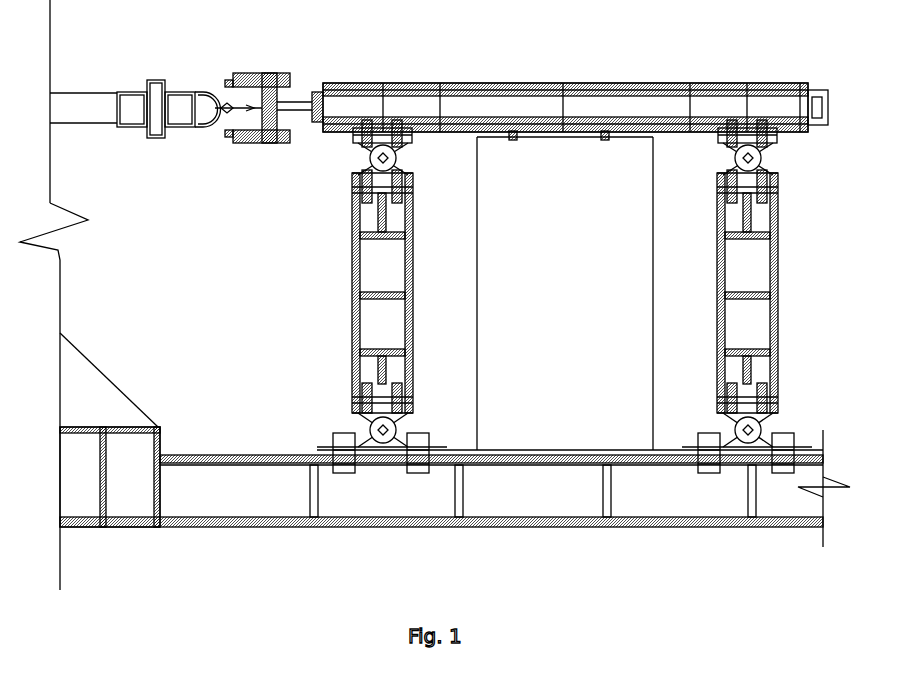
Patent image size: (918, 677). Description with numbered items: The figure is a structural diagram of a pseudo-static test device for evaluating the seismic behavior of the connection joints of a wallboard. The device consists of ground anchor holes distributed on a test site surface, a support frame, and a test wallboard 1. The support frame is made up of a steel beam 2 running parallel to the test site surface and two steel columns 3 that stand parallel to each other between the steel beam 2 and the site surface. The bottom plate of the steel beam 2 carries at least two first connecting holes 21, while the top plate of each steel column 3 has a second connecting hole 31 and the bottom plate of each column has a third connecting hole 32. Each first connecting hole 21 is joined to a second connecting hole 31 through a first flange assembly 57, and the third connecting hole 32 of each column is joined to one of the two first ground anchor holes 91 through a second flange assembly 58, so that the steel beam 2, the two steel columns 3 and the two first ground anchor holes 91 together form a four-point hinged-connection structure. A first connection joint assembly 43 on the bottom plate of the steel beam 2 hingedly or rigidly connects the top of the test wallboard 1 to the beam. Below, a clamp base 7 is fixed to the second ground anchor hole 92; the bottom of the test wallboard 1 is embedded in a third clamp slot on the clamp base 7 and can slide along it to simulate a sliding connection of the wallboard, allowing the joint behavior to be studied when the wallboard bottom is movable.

The test wallboard 1 is at (505, 272).
The steel beam 2 is at (540, 82).
The steel columns 3 is at (365, 283).
The clamp base 7 is at (660, 447).
The first connecting holes 21 is at (334, 134).
The second connecting hole 31 is at (356, 186).
The third connecting hole 32 is at (357, 388).
The first connection joint assembly 43 is at (512, 136).
The first flange assembly 57 is at (370, 150).
The second flange assembly 58 is at (398, 428).
The first ground anchor holes 91 is at (353, 473).
The second ground anchor hole 92 is at (490, 457).